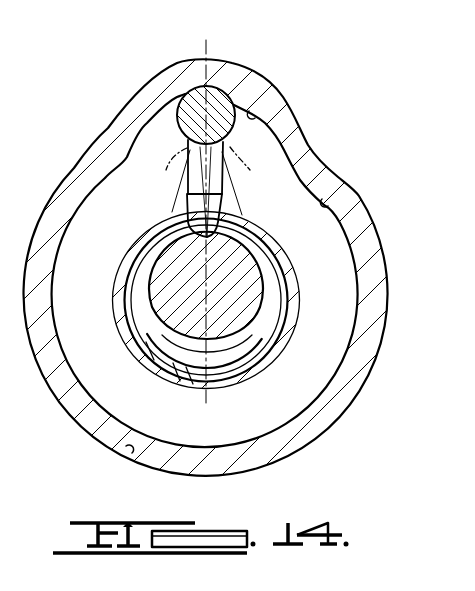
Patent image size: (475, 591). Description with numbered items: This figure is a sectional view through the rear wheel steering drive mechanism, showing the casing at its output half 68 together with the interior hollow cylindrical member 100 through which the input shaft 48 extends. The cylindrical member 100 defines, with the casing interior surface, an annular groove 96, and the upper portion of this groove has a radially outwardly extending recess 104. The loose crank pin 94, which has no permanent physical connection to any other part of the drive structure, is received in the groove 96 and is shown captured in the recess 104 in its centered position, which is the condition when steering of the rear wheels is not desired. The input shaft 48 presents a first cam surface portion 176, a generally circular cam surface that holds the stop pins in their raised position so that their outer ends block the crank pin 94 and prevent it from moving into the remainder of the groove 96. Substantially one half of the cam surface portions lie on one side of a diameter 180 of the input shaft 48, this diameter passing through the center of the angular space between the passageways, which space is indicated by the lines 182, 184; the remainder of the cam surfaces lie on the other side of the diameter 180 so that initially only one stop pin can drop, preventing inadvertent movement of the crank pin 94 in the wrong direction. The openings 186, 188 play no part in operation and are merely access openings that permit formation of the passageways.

The output half 68 is at (391, 292).
The loose crank pin 94 is at (227, 94).
The recess 104 is at (259, 117).
The groove 96 is at (340, 196).
The first cam surface portion 176 is at (245, 262).
The input shaft 48 is at (153, 307).
The line 182 is at (164, 172).
The line 184 is at (251, 171).
The hollow cylindrical member 100 is at (254, 369).
The diameter 180 is at (207, 352).
The opening 186 is at (147, 355).
The opening 188 is at (130, 456).